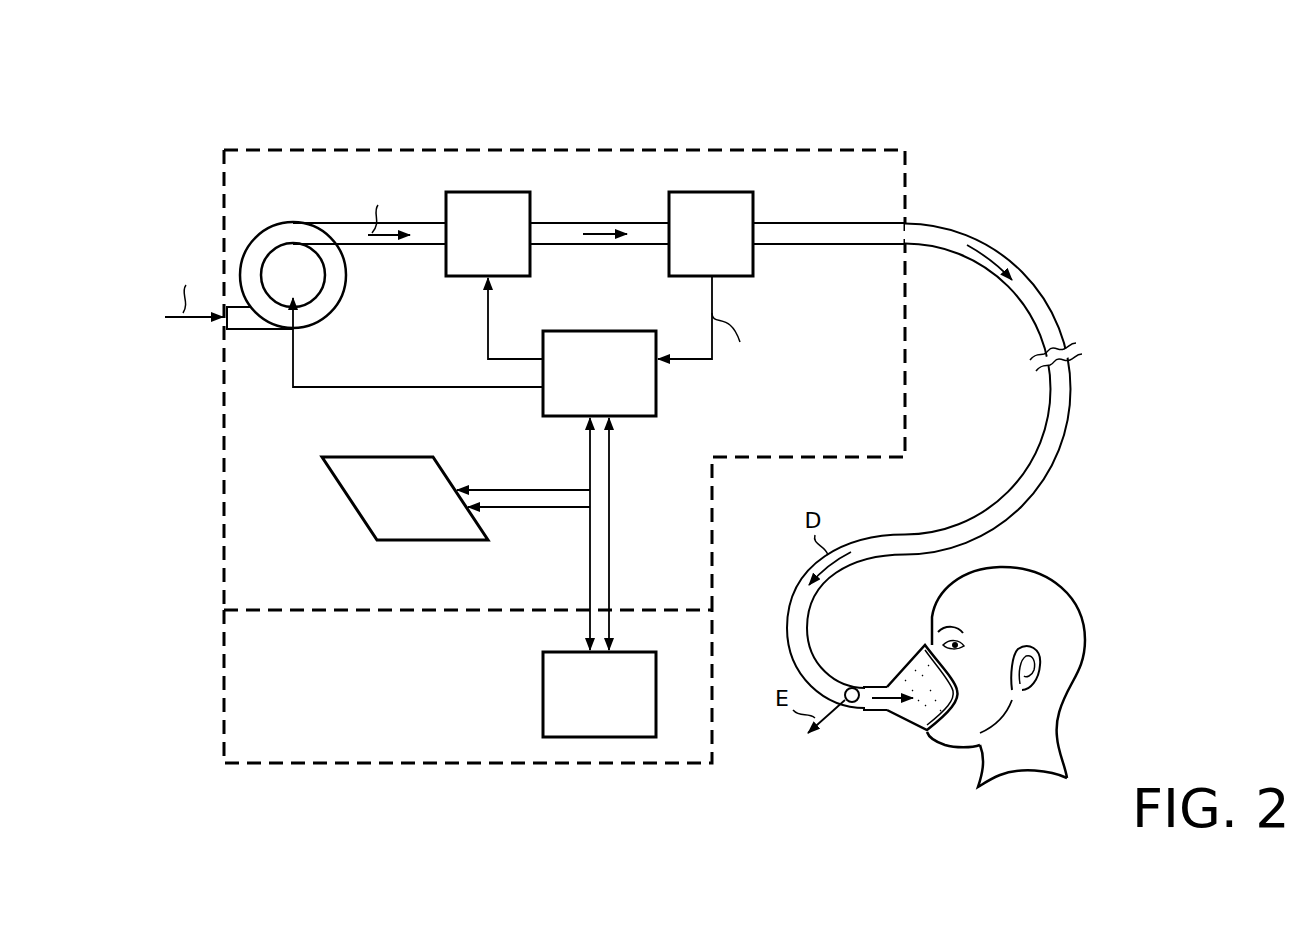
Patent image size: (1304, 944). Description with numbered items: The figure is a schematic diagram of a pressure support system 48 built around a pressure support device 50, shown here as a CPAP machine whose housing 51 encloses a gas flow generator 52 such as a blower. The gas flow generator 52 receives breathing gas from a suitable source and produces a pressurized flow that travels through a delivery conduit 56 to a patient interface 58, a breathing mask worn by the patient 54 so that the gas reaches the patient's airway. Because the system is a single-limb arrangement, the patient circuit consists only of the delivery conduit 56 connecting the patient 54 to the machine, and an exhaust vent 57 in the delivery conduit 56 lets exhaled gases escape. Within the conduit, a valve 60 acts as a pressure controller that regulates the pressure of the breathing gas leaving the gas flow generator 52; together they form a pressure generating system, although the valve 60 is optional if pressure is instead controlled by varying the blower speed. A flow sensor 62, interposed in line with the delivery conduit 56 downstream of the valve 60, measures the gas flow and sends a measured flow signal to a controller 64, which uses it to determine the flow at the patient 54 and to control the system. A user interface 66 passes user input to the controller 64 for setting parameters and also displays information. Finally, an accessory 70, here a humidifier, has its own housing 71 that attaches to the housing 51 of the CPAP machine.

The pressure support system 48 is at (303, 790).
The pressure support device 50 is at (306, 136).
The housing 51 is at (497, 148).
The gas flow generator 52 is at (283, 222).
The patient 54 is at (1066, 587).
The delivery conduit 56 is at (978, 238).
The exhaust vent 57 is at (852, 704).
The patient interface 58 is at (912, 728).
The valve 60 is at (474, 246).
The flow sensor 62 is at (697, 246).
The controller 64 is at (585, 385).
The user interface 66 is at (391, 510).
The accessory 70 is at (585, 706).
The housing 71 is at (495, 765).